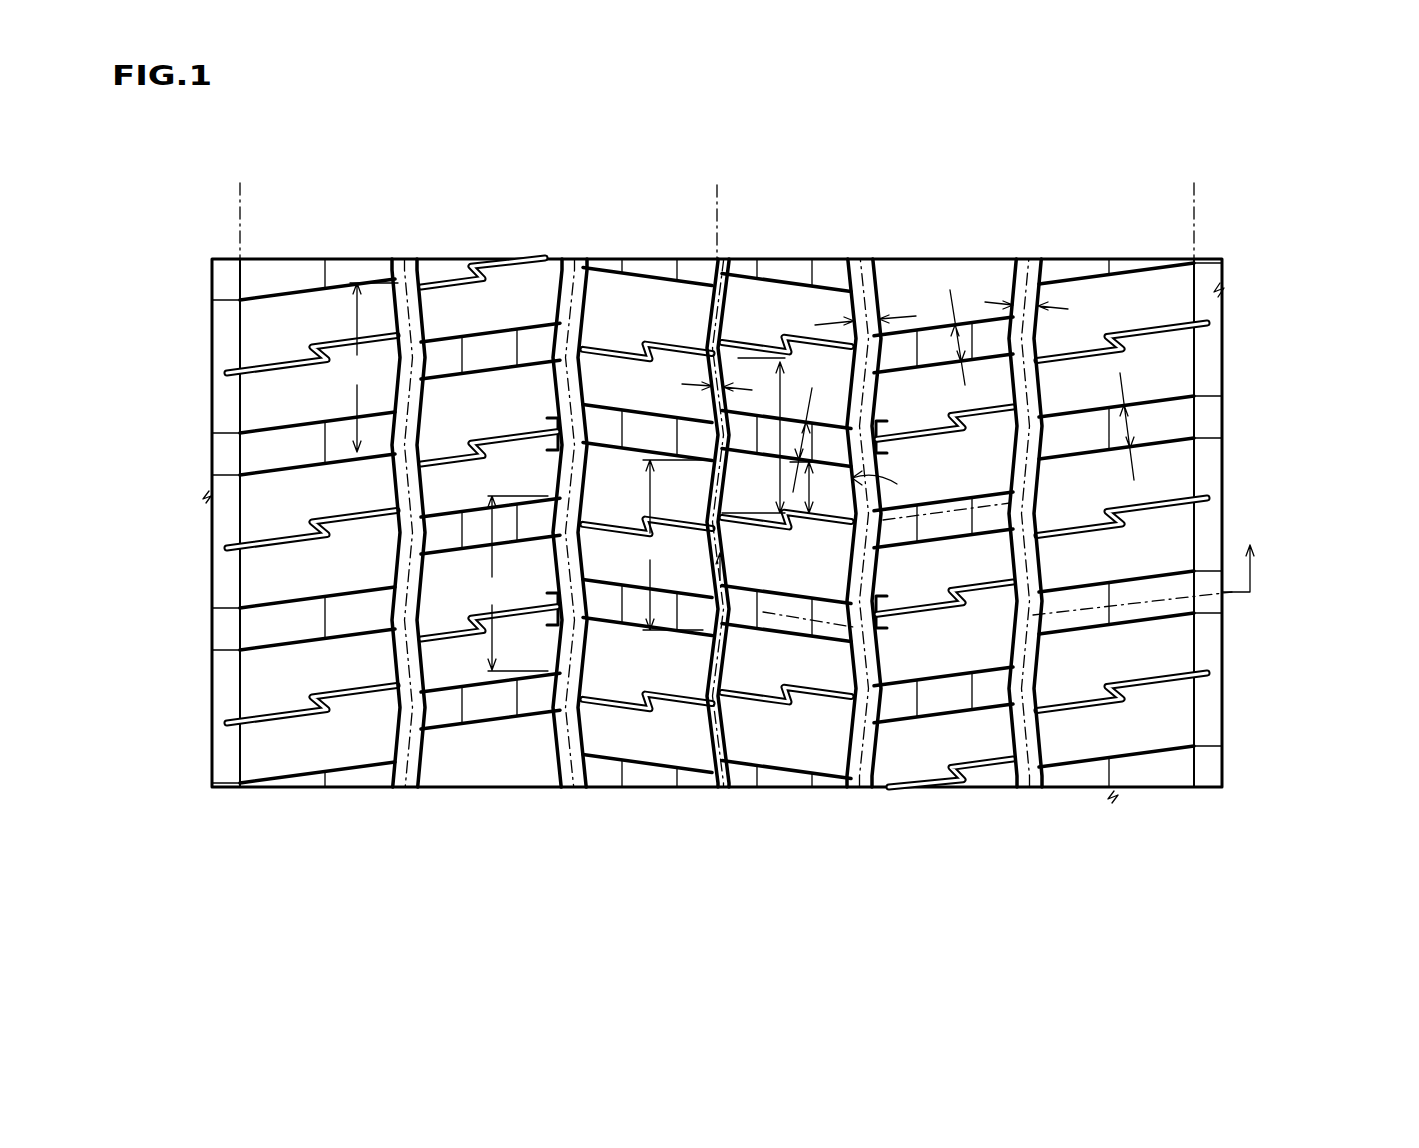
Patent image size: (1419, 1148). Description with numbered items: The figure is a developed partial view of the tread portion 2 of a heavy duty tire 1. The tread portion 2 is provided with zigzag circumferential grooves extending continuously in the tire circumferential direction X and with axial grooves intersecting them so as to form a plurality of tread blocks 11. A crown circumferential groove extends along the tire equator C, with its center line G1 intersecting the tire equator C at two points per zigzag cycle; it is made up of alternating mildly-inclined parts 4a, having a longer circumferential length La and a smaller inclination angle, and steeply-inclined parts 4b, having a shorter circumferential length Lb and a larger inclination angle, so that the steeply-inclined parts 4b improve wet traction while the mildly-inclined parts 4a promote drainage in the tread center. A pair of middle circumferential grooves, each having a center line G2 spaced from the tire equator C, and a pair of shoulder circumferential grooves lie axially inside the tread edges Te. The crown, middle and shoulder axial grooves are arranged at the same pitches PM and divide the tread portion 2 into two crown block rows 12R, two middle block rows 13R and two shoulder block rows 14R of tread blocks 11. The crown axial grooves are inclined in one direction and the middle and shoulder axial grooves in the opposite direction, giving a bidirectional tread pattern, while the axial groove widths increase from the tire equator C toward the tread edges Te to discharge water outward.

The heavy duty tire 1 is at (1268, 208).
The tread portion 2 is at (1153, 204).
The mildly-inclined part 4a is at (718, 745).
The steeply-inclined part 4b is at (707, 345).
The tread block 11 is at (782, 737).
The crown block row 12R is at (711, 501).
The middle block row 13R is at (707, 501).
The shoulder block row 14R is at (717, 501).
The tread edge Te is at (719, 471).
The tire equator C is at (716, 208).
The center line of the crown circumferential groove G1 is at (670, 515).
The center line of the middle circumferential groove G2 is at (393, 262).
The pitch PM is at (519, 477).
The circumferential length of the mildly-inclined part La is at (758, 435).
The circumferential length of the steeply-inclined part Lb is at (817, 508).
The tire circumferential direction X is at (995, 568).